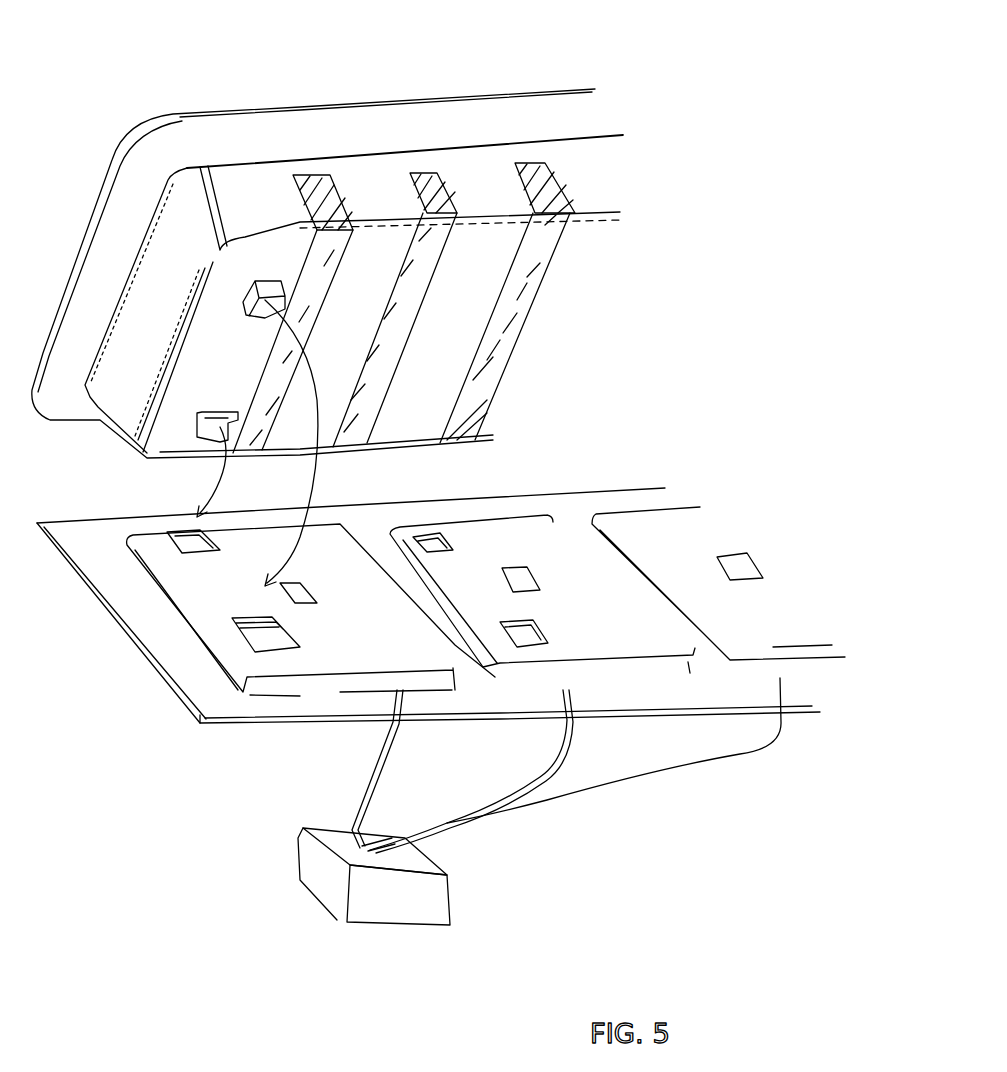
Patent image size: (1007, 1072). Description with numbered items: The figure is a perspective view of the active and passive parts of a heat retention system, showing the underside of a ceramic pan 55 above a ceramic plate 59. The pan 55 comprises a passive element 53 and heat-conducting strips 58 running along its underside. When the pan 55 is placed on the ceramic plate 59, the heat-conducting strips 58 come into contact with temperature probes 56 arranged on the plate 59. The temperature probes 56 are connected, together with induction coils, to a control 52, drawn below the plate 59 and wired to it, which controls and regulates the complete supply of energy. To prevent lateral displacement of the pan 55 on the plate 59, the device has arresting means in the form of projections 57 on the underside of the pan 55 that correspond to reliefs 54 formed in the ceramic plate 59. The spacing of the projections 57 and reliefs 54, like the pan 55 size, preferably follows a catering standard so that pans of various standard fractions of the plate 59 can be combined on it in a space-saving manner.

The control 52 is at (433, 897).
The passive element 53 is at (378, 263).
The reliefs 54 is at (260, 633).
The ceramic pan 55 is at (492, 113).
The temperature probes 56 is at (522, 576).
The projections 57 is at (277, 281).
The heat-conducting strips 58 is at (300, 176).
The ceramic plate 59 is at (217, 700).